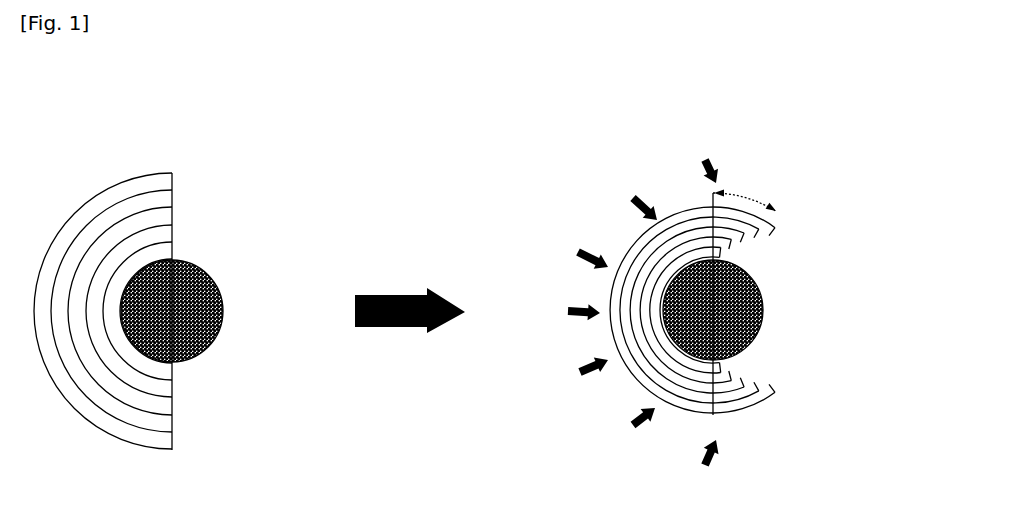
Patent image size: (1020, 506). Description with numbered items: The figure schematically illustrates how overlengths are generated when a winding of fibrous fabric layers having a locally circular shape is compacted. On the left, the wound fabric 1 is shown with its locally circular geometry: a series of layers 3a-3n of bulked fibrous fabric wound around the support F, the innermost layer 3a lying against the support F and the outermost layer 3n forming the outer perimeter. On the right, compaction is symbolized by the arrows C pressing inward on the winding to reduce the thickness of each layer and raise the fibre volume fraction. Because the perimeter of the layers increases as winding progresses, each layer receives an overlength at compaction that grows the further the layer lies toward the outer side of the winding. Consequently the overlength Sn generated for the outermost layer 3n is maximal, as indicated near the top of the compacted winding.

The wound fabric 1 is at (107, 170).
The innermost wound layer 3a is at (177, 370).
The outermost wound layer 3n is at (200, 384).
The support F is at (223, 300).
The compaction arrows C is at (707, 178).
The overlength of outermost layer Sn is at (744, 188).